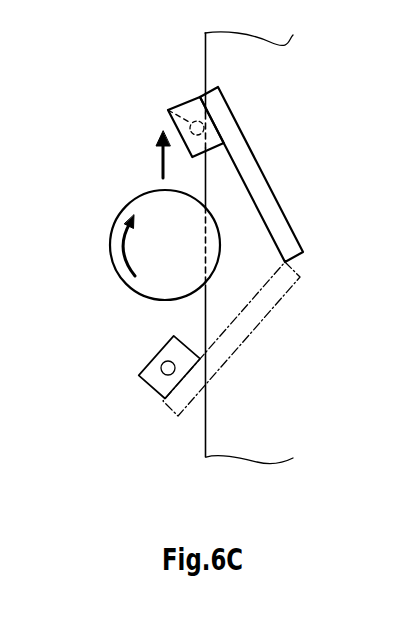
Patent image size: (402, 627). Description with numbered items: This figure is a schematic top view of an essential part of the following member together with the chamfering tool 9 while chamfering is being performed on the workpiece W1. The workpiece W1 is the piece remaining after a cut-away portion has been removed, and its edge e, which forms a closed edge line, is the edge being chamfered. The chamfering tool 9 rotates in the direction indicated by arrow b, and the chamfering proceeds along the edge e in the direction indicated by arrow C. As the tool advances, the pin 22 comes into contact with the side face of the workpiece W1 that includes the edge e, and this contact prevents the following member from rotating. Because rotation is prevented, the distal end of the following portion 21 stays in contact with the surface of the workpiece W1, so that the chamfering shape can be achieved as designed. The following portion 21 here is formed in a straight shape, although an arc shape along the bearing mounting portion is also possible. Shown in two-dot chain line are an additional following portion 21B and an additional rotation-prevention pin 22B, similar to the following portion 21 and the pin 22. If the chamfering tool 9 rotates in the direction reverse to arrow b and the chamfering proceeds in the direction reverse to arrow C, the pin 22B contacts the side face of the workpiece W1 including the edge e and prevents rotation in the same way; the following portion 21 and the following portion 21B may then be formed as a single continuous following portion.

The workpiece W1 is at (218, 430).
The edge e is at (205, 63).
The following portion 21 is at (257, 153).
The pin 22 is at (168, 112).
The arrow C is at (160, 152).
The chamfering tool 9 is at (111, 267).
The arrow b is at (111, 243).
The following portion 21B is at (244, 344).
The rotation-prevention pin 22B is at (164, 362).